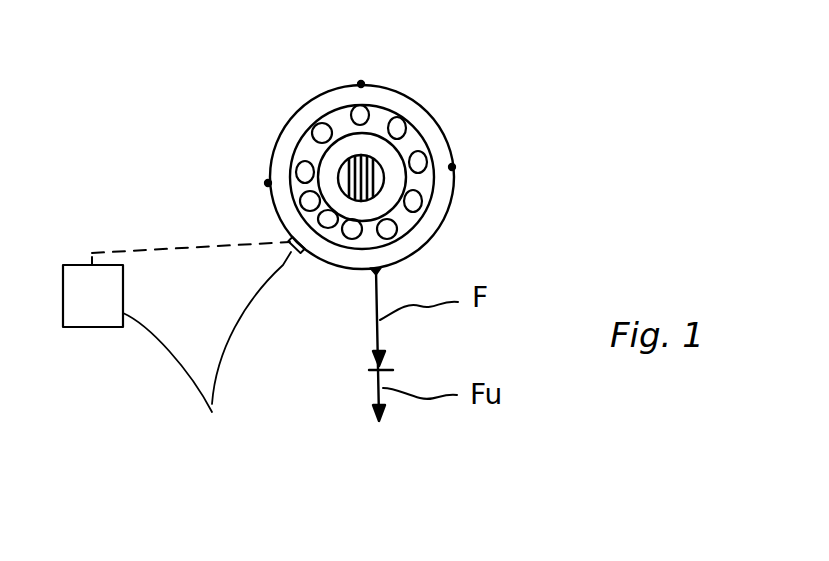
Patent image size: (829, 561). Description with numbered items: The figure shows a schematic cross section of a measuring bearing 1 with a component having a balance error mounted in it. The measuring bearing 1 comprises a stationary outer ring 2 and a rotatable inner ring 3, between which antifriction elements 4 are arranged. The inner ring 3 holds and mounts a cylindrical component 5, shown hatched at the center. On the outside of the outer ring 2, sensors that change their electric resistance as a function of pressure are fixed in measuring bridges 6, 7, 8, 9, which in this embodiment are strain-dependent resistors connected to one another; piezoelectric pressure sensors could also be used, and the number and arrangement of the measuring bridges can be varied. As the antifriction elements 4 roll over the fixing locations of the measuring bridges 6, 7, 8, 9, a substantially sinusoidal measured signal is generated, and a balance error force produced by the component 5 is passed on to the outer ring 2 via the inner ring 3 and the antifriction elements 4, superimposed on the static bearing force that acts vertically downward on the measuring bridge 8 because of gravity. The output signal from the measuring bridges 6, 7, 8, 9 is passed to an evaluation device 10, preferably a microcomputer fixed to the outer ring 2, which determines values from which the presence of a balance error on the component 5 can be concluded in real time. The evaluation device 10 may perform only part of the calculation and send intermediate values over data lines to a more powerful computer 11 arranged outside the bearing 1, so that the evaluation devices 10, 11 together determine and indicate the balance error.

The measuring bearing 1 is at (216, 120).
The outer ring 2 is at (443, 127).
The inner ring 3 is at (398, 178).
The antifriction elements 4 is at (362, 107).
The cylindrical component 5 is at (350, 160).
The measuring bridge 6 is at (361, 84).
The measuring bridge 7 is at (452, 167).
The measuring bridge 8 is at (374, 271).
The measuring bridge 9 is at (268, 183).
The evaluation device 10 is at (284, 270).
The computer 11 is at (110, 311).